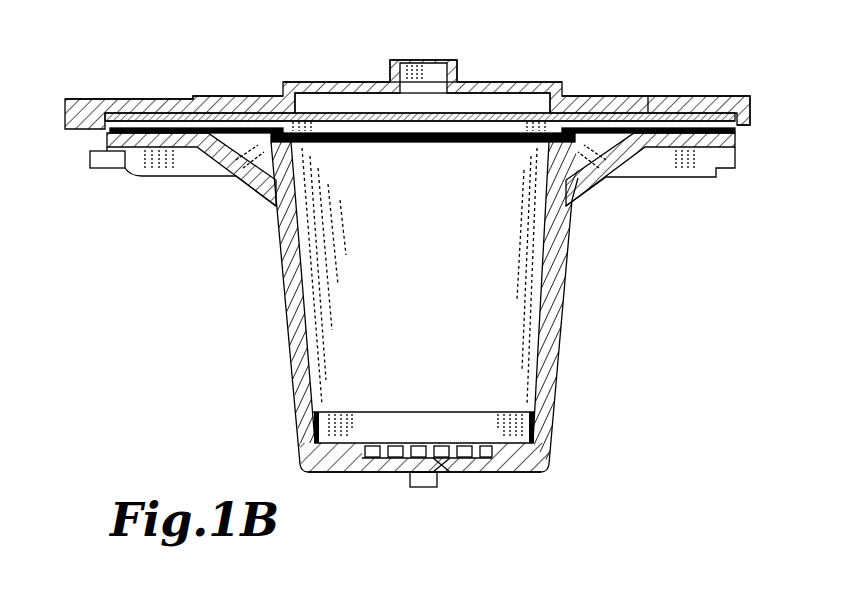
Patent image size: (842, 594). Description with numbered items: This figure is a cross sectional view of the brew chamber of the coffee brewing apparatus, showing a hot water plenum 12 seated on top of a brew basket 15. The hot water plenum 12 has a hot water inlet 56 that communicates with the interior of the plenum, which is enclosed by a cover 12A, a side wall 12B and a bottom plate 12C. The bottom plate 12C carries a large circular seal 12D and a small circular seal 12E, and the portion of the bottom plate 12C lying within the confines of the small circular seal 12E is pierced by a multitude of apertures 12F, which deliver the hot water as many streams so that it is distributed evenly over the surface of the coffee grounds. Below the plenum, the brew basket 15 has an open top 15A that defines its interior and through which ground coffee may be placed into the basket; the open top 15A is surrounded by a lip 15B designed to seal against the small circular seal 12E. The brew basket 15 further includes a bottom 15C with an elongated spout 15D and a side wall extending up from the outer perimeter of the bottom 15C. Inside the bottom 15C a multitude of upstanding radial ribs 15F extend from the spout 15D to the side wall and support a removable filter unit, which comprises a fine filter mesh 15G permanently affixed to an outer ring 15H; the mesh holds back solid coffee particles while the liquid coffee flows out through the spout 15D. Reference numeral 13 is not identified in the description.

The hot water plenum 12 is at (407, 77).
The cover 12A is at (485, 83).
The side wall 12B is at (556, 97).
The bottom plate 12C is at (667, 98).
The large circular seal 12D is at (138, 117).
The small circular seal 12E is at (280, 110).
The apertures 12F is at (352, 82).
The hot water inlet 56 is at (430, 60).
The latch tab 13 is at (90, 168).
The brew basket 15 is at (409, 265).
The open top 15A is at (417, 138).
The lip 15B is at (252, 196).
The bottom 15C is at (510, 452).
The elongated spout 15D is at (430, 487).
The upstanding radial ribs 15F is at (467, 475).
The filter mesh 15G is at (400, 476).
The outer ring 15H is at (318, 428).